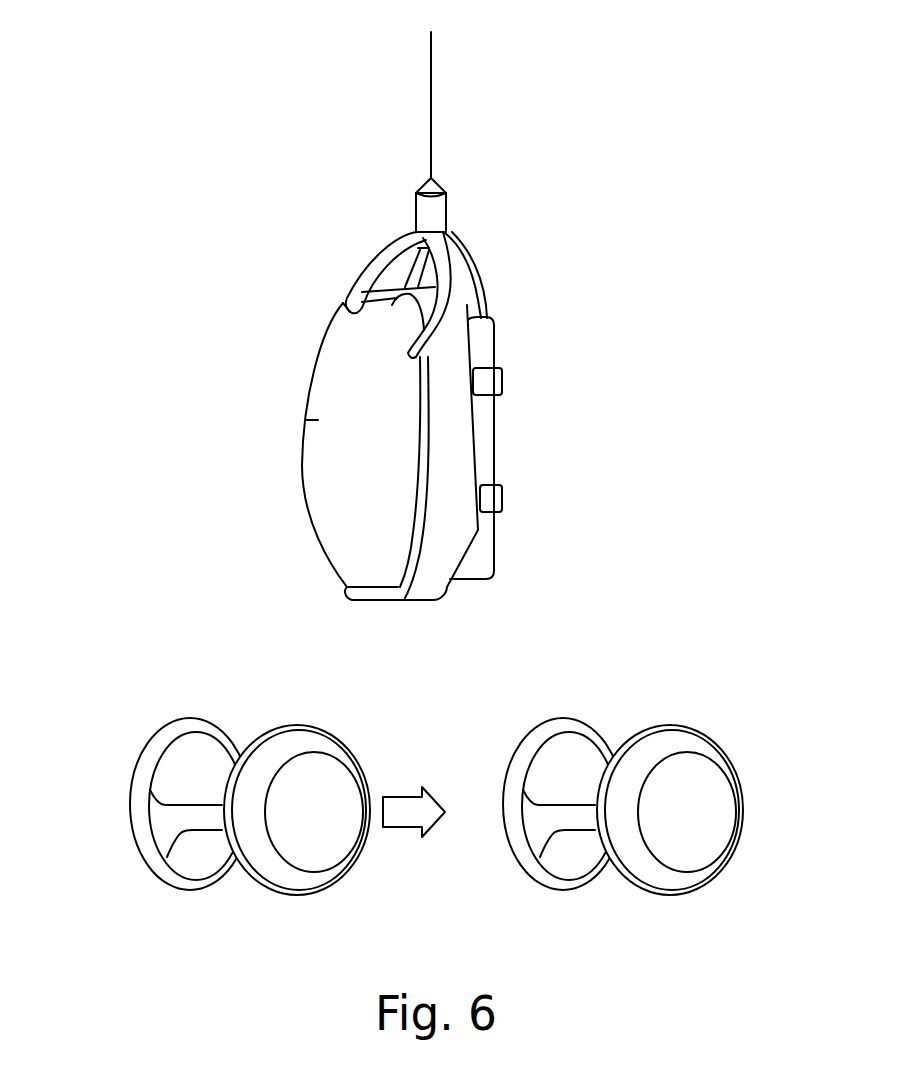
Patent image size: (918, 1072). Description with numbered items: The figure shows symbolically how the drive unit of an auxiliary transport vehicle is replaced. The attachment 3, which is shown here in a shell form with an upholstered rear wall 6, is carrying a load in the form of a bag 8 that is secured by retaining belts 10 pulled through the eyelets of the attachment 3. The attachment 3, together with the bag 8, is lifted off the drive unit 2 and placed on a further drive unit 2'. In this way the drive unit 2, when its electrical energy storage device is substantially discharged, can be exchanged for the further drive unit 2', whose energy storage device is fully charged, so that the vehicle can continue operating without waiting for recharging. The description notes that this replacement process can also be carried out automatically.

The drive unit 2 is at (676, 794).
The further drive unit 2' is at (207, 799).
The attachment 3 is at (460, 538).
The rear wall 6 is at (323, 425).
The bag 8 is at (495, 342).
The retaining belts 10 is at (500, 383).